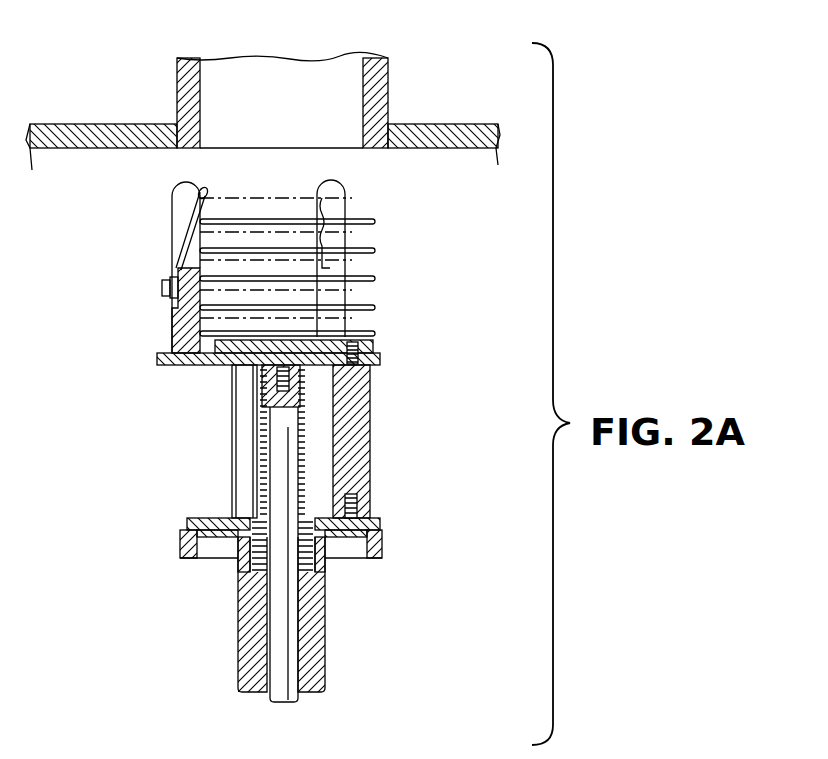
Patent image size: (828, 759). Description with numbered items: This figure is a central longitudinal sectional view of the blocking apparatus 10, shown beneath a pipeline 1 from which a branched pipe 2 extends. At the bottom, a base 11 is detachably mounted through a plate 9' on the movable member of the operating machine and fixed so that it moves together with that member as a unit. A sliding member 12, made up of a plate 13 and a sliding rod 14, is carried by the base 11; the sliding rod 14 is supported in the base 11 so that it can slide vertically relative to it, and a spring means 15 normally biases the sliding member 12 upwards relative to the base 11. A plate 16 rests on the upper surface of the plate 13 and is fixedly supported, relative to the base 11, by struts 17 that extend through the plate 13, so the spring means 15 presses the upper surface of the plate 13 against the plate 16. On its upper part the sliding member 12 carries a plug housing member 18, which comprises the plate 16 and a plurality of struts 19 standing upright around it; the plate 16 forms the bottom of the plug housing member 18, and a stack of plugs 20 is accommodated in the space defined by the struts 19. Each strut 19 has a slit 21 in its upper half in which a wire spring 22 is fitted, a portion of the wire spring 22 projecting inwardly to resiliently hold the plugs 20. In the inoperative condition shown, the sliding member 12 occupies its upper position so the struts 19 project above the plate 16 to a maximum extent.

The pipeline 1 is at (463, 132).
The branched pipe 2 is at (185, 100).
The blocking apparatus 10 is at (455, 254).
The plug housing member 18 is at (155, 241).
The struts 19 is at (175, 328).
The plugs 20 is at (380, 208).
The slit 21 is at (380, 265).
The wire spring 22 is at (212, 197).
The plate 16 is at (380, 350).
The plate 13 is at (175, 365).
The struts 17 is at (380, 393).
The sliding member 12 is at (306, 402).
The sliding rod 14 is at (288, 448).
The spring means 15 is at (300, 495).
The plate 9' is at (327, 560).
The base 11 is at (315, 620).